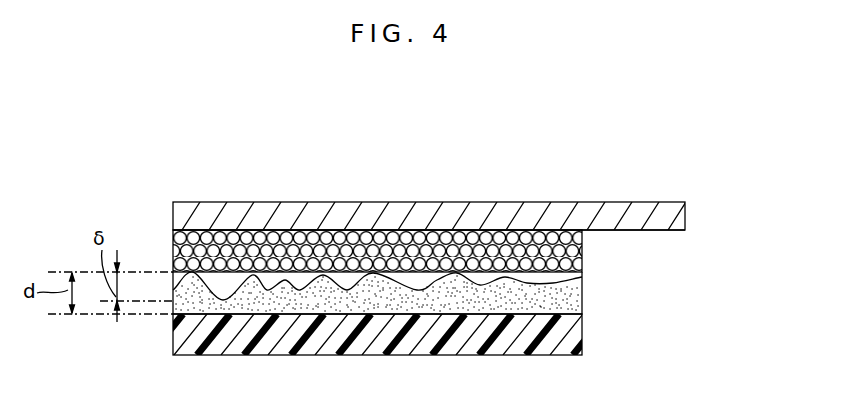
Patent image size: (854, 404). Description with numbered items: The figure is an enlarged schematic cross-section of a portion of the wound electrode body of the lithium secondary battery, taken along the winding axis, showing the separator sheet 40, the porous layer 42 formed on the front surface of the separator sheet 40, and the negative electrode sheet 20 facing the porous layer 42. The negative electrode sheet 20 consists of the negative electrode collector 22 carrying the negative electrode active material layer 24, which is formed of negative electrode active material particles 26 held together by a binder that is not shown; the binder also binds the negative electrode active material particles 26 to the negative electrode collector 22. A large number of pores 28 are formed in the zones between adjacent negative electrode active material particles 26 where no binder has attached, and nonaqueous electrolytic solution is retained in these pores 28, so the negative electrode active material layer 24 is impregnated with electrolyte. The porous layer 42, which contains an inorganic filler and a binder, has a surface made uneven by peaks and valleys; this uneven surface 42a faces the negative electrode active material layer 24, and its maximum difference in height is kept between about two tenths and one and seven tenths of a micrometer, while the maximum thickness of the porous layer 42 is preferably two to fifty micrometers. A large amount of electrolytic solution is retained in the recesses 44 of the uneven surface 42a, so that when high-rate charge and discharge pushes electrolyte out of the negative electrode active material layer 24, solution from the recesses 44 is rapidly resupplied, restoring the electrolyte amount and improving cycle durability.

The negative electrode sheet 20 is at (460, 218).
The negative electrode collector 22 is at (683, 218).
The negative electrode active material layer 24 is at (460, 218).
The negative electrode active material particles 26 is at (478, 237).
The pores 28 is at (455, 230).
The separator sheet 40 is at (582, 330).
The porous layer 42 is at (414, 240).
The uneven surface 42a is at (270, 287).
The recesses 44 is at (222, 290).